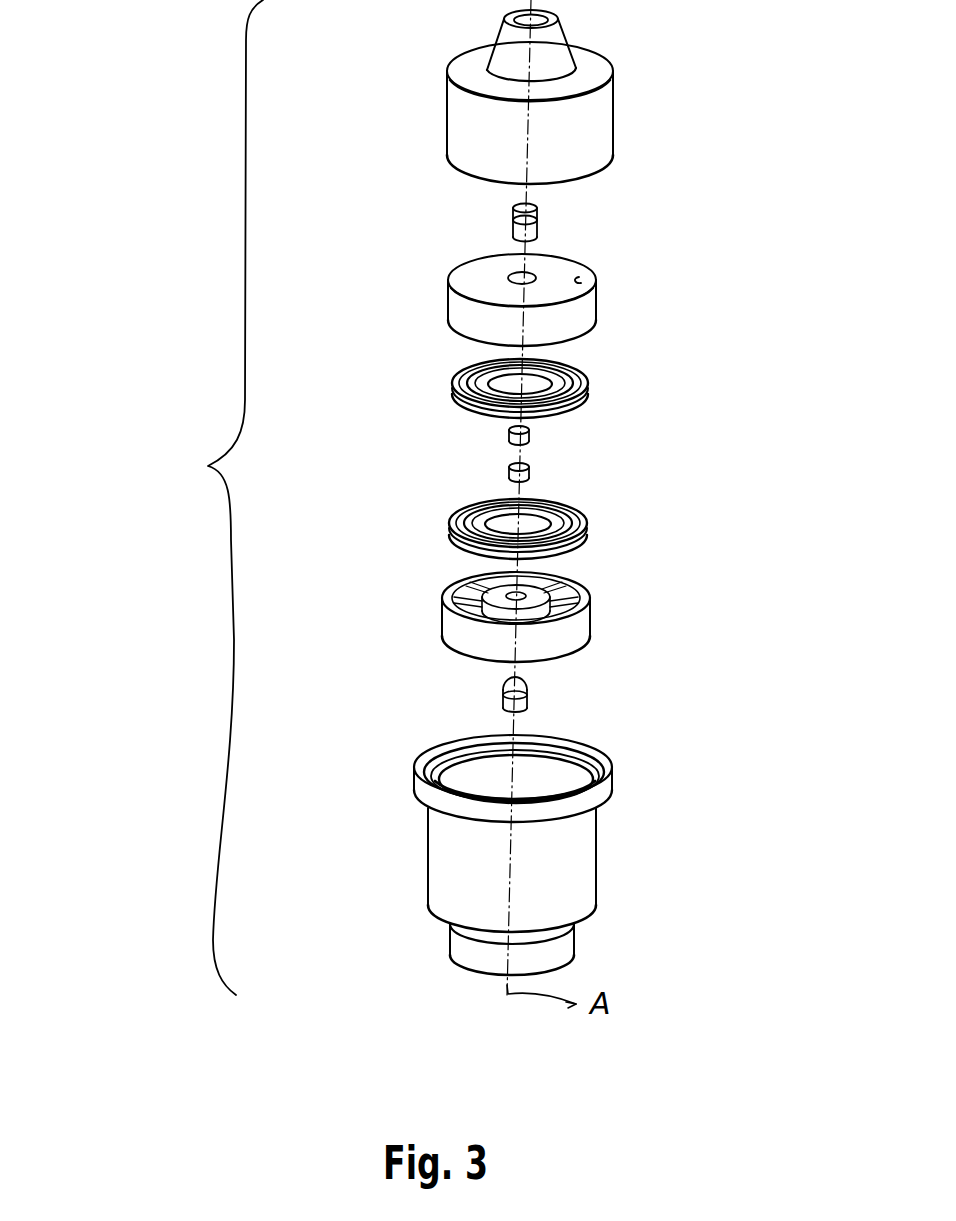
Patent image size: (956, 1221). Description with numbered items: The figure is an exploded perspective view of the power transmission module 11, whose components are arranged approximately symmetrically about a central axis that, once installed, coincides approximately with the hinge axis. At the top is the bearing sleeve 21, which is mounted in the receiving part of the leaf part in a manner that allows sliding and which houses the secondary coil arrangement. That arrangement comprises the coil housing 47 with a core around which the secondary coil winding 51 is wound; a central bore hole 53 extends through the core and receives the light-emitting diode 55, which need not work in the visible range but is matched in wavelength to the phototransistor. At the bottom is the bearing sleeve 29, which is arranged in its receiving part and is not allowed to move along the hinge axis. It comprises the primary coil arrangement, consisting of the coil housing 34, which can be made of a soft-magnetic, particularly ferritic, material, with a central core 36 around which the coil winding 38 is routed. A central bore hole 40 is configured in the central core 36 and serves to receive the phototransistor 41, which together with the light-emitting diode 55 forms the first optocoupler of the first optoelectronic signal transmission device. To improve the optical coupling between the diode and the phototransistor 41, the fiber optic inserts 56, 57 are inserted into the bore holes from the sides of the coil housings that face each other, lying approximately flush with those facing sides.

The power transmission module 11 is at (192, 497).
The bearing sleeve 21 is at (587, 127).
The light-emitting diode 55 is at (538, 215).
The central bore hole 53 is at (530, 276).
The coil housing 47 is at (577, 318).
The secondary coil winding 51 is at (586, 396).
The fiber optic insert 56 is at (531, 438).
The fiber optic insert 57 is at (531, 476).
The coil winding 38 is at (584, 533).
The central bore hole 40 is at (540, 591).
The central core 36 is at (553, 609).
The coil housing 34 is at (589, 635).
The phototransistor 41 is at (500, 692).
The bearing sleeve 29 is at (455, 858).